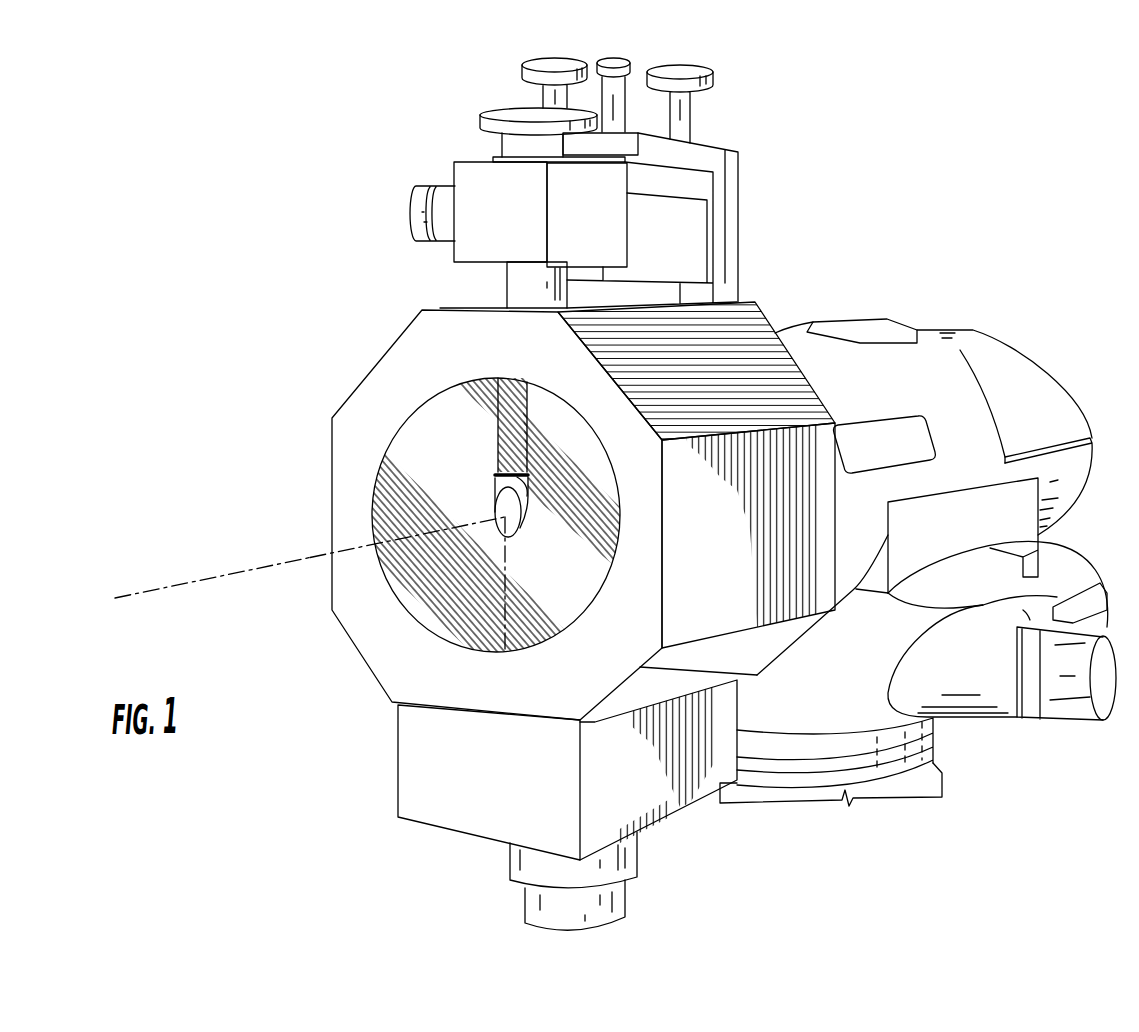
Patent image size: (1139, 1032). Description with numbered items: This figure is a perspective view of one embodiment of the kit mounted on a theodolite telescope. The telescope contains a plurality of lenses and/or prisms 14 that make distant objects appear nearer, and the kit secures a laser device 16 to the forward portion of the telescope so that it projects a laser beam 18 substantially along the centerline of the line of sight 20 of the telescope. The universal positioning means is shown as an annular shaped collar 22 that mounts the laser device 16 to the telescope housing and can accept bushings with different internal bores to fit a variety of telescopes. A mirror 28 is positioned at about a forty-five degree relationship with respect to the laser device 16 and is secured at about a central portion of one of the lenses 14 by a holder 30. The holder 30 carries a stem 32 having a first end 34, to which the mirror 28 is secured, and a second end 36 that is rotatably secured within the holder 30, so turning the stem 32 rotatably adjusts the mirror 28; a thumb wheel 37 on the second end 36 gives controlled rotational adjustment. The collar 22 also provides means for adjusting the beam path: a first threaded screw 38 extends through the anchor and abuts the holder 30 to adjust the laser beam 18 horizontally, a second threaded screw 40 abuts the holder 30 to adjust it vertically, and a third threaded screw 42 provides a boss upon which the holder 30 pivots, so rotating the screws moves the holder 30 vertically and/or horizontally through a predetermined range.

The lenses and/or prisms 14 is at (415, 487).
The laser device 16 is at (520, 863).
The laser beam 18 is at (168, 582).
The line of sight 20 is at (298, 555).
The annular shaped collar 22 is at (420, 348).
The mirror 28 is at (493, 498).
The holder 30 is at (457, 165).
The stem 32 is at (518, 292).
The first end 34 is at (530, 500).
The second end 36 is at (502, 142).
The thumb wheel 37 is at (498, 115).
The first threaded screw 38 is at (555, 53).
The second threaded screw 40 is at (687, 63).
The third threaded screw 42 is at (608, 57).